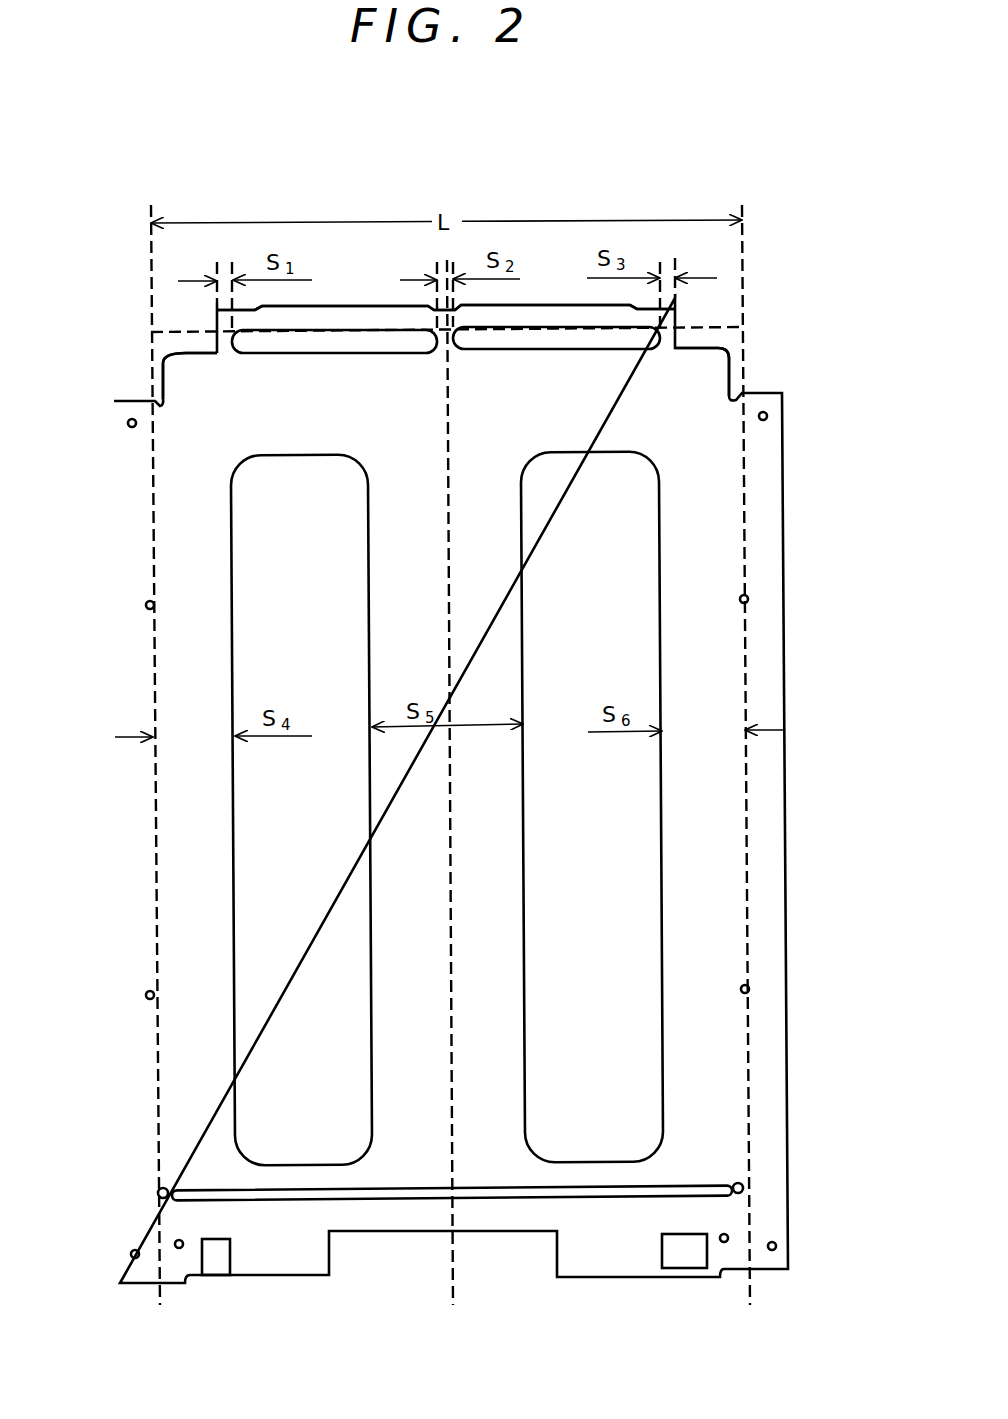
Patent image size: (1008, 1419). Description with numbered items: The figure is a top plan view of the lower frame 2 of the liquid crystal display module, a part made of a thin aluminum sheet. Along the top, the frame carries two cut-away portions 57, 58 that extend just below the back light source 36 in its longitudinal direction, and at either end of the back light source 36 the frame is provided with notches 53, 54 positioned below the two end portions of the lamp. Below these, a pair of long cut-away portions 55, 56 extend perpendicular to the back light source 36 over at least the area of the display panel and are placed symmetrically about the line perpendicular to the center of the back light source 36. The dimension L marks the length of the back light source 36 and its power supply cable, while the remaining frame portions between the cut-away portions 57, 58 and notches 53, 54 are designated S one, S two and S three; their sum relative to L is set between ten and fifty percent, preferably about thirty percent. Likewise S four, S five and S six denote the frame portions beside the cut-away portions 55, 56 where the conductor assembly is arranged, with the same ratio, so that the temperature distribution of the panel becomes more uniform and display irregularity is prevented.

The lower frame 2 is at (783, 853).
The back light source 36 is at (193, 338).
The notch 53 is at (152, 357).
The notch 54 is at (707, 345).
The cut-away portion 55 is at (282, 547).
The cut-away portion 56 is at (637, 562).
The cut-away portion 57 is at (332, 342).
The cut-away portion 58 is at (572, 340).